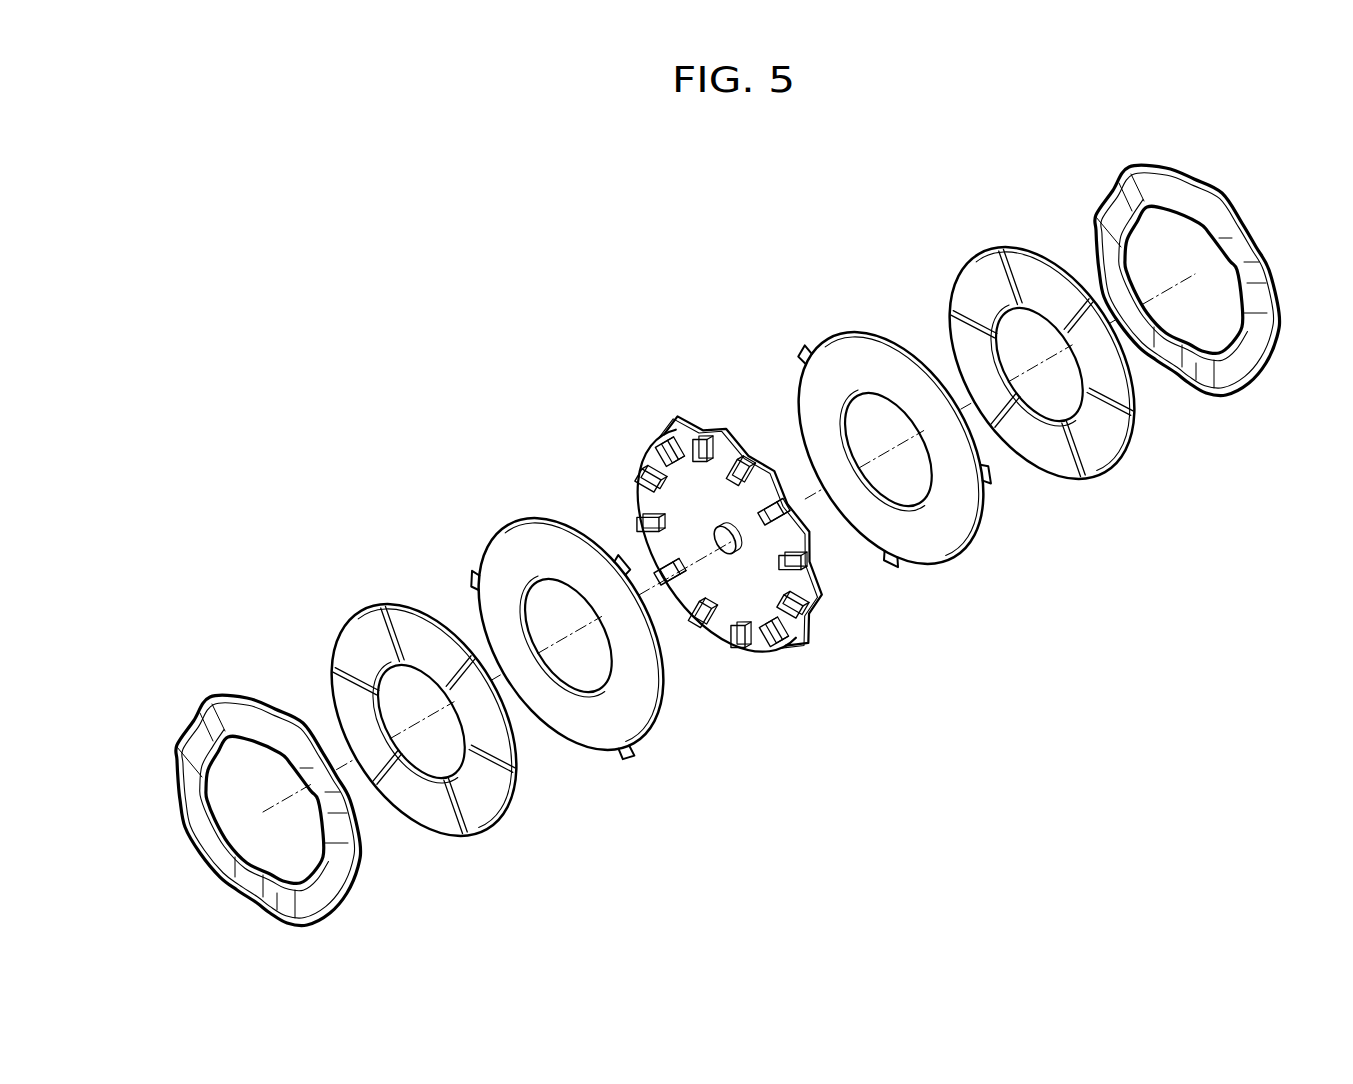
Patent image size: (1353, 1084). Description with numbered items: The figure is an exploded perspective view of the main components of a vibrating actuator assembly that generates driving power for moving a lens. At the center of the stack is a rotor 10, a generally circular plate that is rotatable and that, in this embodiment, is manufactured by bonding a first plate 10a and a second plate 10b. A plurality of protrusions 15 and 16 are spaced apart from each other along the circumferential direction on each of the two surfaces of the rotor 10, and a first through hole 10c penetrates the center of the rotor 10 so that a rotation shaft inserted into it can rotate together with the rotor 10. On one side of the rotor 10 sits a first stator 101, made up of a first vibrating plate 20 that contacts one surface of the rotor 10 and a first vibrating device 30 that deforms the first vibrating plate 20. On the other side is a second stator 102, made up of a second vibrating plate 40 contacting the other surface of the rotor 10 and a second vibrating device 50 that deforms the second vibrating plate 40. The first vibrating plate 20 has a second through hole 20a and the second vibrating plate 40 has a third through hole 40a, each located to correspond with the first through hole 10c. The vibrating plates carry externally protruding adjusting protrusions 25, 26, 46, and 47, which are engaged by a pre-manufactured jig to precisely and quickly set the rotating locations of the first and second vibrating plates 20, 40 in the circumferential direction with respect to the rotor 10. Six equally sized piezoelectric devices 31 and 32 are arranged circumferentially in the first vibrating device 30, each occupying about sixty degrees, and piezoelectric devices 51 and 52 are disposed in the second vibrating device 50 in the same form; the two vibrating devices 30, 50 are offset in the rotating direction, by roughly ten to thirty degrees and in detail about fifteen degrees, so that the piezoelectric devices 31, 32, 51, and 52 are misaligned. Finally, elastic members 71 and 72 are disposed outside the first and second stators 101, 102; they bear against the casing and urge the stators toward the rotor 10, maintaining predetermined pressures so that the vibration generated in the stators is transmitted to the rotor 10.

The rotor 10 is at (608, 383).
The first plate 10a is at (655, 446).
The second plate 10b is at (712, 420).
The first through hole 10c is at (733, 556).
The protrusion 15 is at (637, 500).
The protrusion 16 is at (745, 436).
The first vibrating plate 20 is at (500, 532).
The second through hole 20a is at (578, 600).
The adjusting protrusion 25 is at (614, 755).
The adjusting protrusion 26 is at (614, 553).
The first vibrating device 30 is at (372, 604).
The piezoelectric device 31 is at (404, 628).
The piezoelectric device 32 is at (465, 687).
The second vibrating plate 40 is at (868, 337).
The third through hole 40a is at (921, 500).
The adjusting protrusion 46 is at (883, 558).
The adjusting protrusion 47 is at (977, 450).
The second vibrating device 50 is at (1000, 247).
The piezoelectric device 51 is at (1107, 383).
The piezoelectric device 52 is at (1102, 450).
The elastic member 71 is at (185, 774).
The elastic member 72 is at (1185, 188).
The first stator 101 is at (321, 546).
The second stator 102 is at (824, 256).